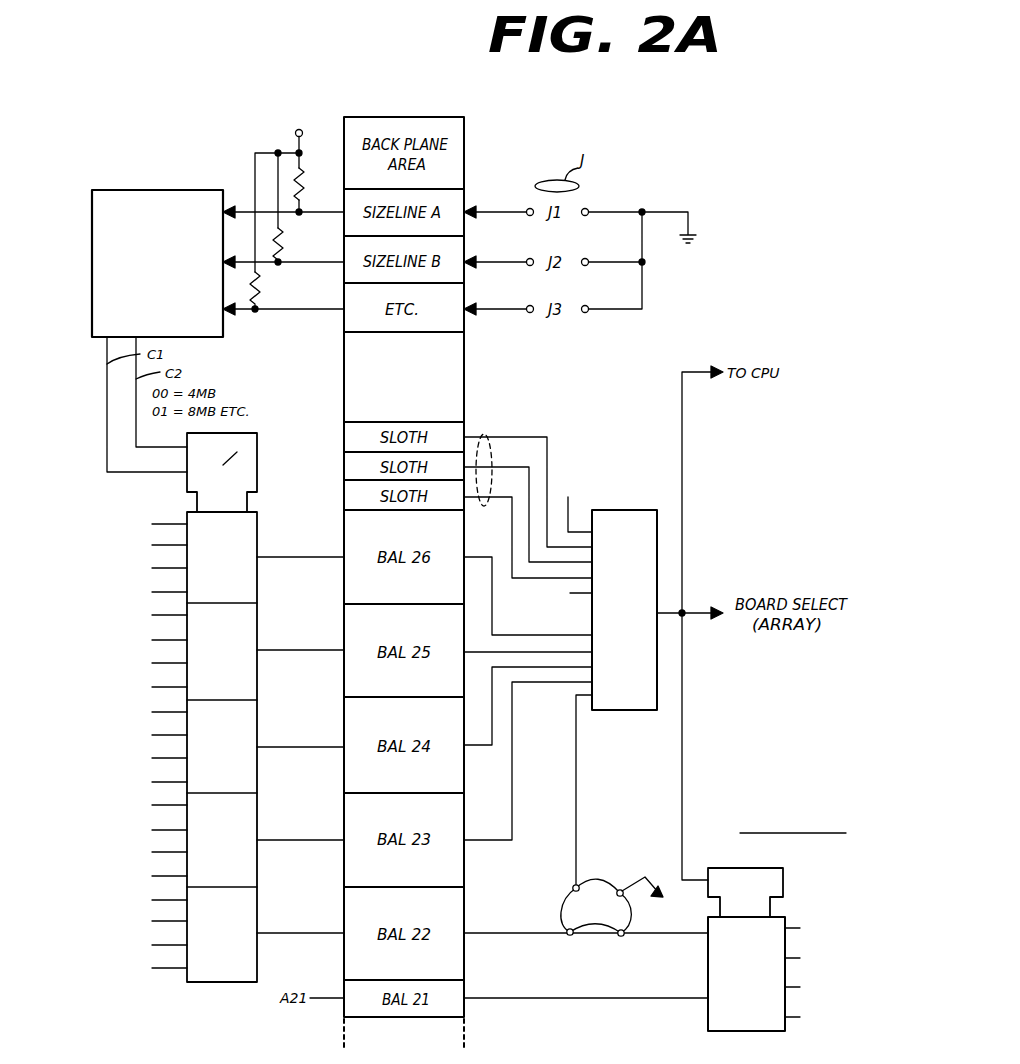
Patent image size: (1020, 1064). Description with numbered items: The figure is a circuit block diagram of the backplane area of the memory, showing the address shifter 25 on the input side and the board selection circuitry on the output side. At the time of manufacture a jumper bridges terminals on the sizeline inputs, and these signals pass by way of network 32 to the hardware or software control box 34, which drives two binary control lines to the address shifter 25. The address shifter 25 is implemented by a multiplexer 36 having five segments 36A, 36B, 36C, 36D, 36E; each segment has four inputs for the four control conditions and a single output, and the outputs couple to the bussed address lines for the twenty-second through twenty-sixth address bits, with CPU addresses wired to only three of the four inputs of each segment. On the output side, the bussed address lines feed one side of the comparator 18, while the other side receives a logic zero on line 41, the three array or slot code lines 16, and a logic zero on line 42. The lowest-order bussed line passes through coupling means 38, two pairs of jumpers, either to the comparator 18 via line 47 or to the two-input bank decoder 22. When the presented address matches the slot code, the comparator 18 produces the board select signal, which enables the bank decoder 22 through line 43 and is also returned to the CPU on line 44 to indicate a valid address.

The control box 34 is at (176, 190).
The network 32 is at (290, 275).
The array or slot code lines 16 is at (487, 434).
The line to comparator 42 is at (580, 484).
The line to comparator 41 is at (575, 594).
The comparator 18 is at (624, 610).
The line to CPU 44 is at (682, 432).
The enable line 43 is at (682, 755).
The line 47 is at (576, 758).
The coupling means 38 is at (561, 883).
The bank decoder 22 is at (708, 1016).
The address shifter 25 is at (233, 728).
The multiplexer 36 is at (268, 512).
The multiplexer segment 36A is at (246, 908).
The multiplexer segment 36B is at (246, 818).
The multiplexer segment 36C is at (248, 722).
The multiplexer segment 36D is at (246, 628).
The multiplexer segment 36E is at (246, 578).